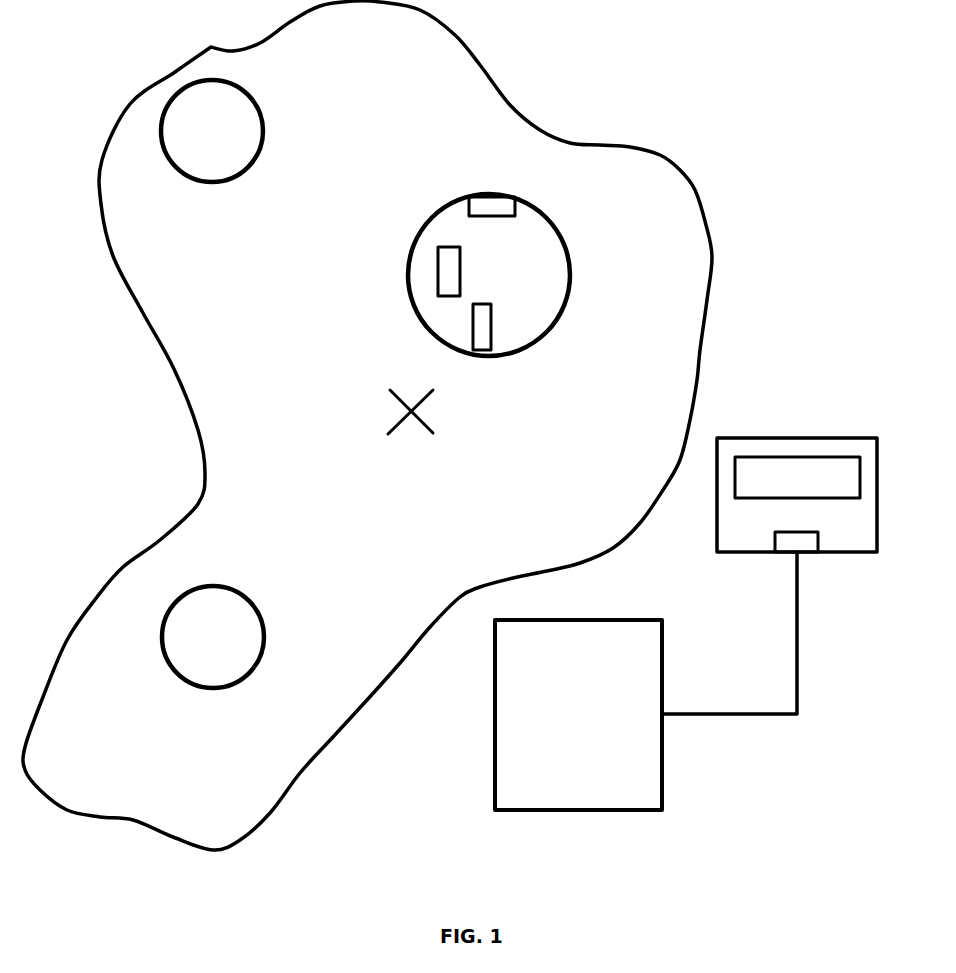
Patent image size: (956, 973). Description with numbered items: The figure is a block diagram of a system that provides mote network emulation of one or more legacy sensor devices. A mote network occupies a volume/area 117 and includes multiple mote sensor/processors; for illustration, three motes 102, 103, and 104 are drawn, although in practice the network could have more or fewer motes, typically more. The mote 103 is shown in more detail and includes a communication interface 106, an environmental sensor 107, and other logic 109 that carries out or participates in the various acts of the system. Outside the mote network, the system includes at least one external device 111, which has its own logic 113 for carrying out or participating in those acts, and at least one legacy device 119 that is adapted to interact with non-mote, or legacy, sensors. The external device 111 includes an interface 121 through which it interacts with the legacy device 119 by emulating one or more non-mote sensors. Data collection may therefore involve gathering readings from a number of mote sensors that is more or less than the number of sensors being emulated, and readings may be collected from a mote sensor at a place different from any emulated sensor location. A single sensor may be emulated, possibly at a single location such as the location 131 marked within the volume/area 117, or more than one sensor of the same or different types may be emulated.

The mote 102 is at (263, 128).
The mote 104 is at (264, 633).
The mote 103 is at (572, 275).
The communication interface 106 is at (473, 192).
The environmental sensor 107 is at (437, 277).
The other logic 109 is at (500, 358).
The external device 111 is at (868, 540).
The logic 113 is at (848, 491).
The volume/area 117 is at (701, 352).
The legacy device 119 is at (654, 799).
The interface 121 is at (780, 553).
The location 131 is at (433, 433).